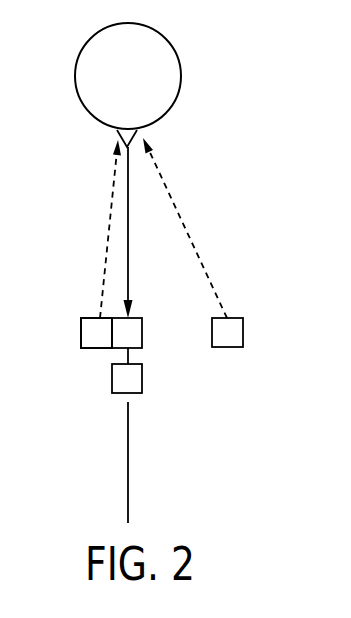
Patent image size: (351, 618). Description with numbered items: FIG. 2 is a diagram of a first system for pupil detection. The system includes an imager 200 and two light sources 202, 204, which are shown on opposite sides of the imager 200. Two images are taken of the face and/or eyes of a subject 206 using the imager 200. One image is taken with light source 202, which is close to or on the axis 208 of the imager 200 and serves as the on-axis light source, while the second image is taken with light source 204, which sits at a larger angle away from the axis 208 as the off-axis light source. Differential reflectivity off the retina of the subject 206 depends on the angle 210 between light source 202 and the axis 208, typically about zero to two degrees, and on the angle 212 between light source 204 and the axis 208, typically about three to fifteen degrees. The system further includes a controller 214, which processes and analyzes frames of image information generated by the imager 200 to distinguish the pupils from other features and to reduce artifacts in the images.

The imager 200 is at (125, 332).
The light source 202 is at (100, 333).
The light source 204 is at (243, 334).
The subject 206 is at (182, 68).
The axis 208 is at (128, 465).
The angle 210 is at (108, 213).
The angle 212 is at (180, 212).
The controller 214 is at (142, 381).